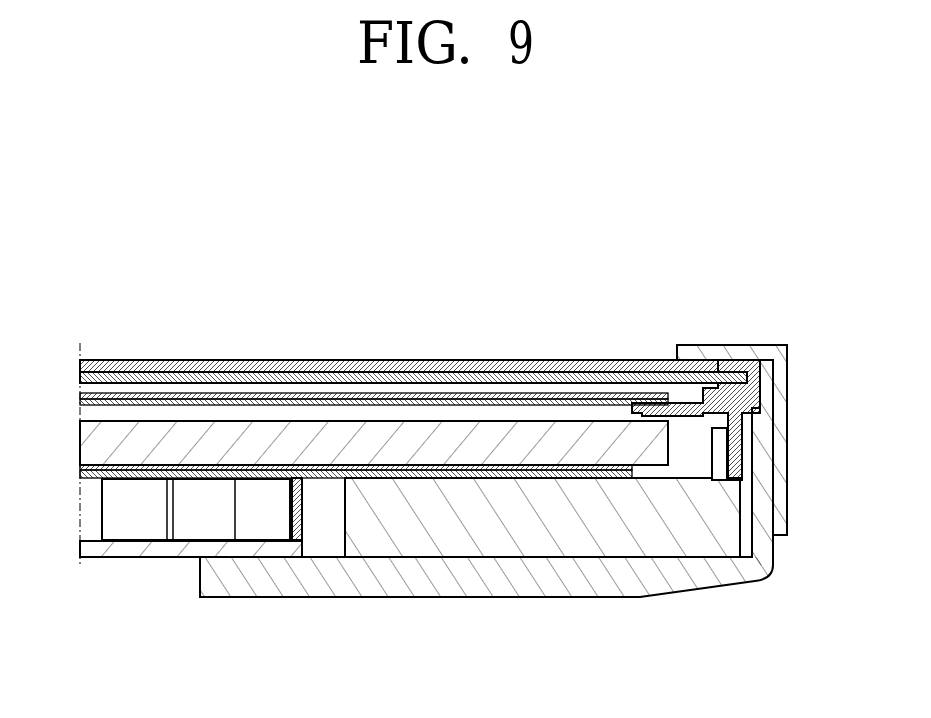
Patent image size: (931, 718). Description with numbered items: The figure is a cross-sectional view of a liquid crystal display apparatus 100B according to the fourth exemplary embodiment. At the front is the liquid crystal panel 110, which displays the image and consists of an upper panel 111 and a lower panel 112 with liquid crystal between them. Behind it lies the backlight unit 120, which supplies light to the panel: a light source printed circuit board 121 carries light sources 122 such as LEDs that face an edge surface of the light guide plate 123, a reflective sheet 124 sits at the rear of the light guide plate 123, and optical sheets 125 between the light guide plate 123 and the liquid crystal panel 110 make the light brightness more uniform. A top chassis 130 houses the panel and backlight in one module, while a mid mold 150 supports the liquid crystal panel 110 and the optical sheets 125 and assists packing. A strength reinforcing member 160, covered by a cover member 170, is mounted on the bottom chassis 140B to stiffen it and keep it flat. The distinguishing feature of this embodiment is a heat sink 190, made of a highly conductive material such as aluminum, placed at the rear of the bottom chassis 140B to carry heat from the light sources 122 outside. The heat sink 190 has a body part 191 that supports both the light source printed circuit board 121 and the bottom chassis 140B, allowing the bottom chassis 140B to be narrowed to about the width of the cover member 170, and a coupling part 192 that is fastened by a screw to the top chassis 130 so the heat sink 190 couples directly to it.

The liquid crystal display apparatus 100B is at (430, 217).
The liquid crystal panel 110 is at (238, 350).
The upper panel 111 is at (80, 363).
The lower panel 112 is at (80, 381).
The backlight unit 120 is at (652, 305).
The light source printed circuit board 121 is at (541, 492).
The light sources 122 is at (720, 452).
The light guide plate 123 is at (425, 427).
The reflective sheet 124 is at (472, 462).
The optical sheets 125 is at (362, 393).
The top chassis 130 is at (800, 398).
The bottom chassis 140B is at (116, 572).
The mid mold 150 is at (752, 386).
The strength reinforcing member 160 is at (156, 507).
The cover member 170 is at (313, 527).
The heat sink 190 is at (500, 609).
The body part 191 is at (412, 580).
The coupling part 192 is at (763, 505).